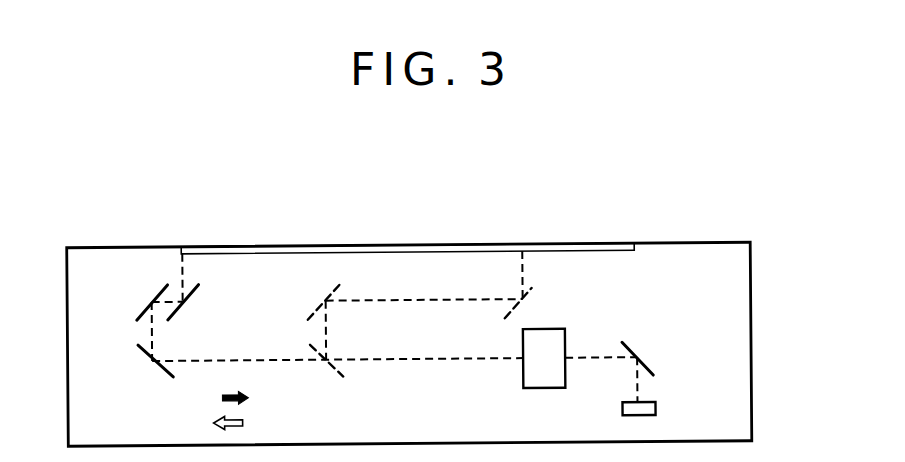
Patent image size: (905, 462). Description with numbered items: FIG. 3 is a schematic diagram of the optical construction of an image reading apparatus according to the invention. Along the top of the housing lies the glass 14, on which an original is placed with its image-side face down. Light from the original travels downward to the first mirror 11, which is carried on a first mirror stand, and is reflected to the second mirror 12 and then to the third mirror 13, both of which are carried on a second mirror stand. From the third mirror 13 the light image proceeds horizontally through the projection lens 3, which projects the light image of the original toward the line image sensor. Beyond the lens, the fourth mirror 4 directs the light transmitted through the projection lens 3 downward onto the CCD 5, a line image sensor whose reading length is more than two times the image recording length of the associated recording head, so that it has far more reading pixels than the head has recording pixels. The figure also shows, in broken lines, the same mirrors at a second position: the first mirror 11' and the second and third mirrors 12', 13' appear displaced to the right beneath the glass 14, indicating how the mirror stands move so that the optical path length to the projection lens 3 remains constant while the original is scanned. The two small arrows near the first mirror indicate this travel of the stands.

The projection lens 3 is at (532, 389).
The fourth mirror 4 is at (648, 365).
The CCD (line image sensor) 5 is at (657, 410).
The first mirror 11 is at (203, 301).
The first mirror 11' is at (549, 299).
The second mirror 12 is at (136, 292).
The second mirror 12' is at (306, 291).
The third mirror 13 is at (148, 386).
The third mirror 13' is at (323, 386).
The glass 14 is at (605, 245).